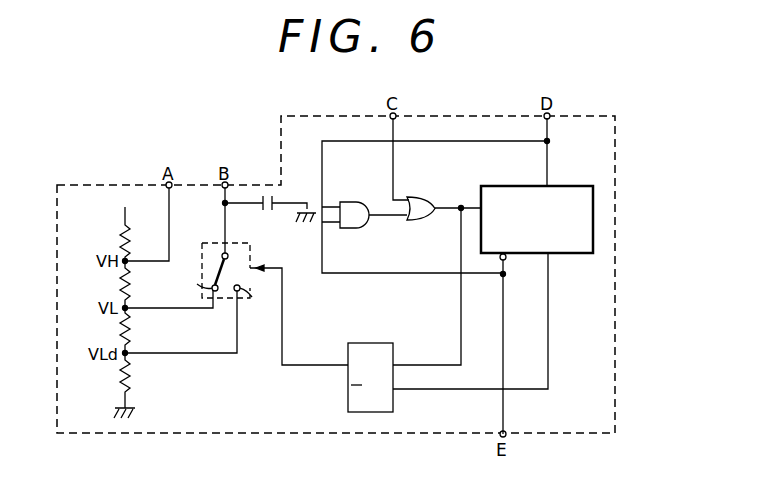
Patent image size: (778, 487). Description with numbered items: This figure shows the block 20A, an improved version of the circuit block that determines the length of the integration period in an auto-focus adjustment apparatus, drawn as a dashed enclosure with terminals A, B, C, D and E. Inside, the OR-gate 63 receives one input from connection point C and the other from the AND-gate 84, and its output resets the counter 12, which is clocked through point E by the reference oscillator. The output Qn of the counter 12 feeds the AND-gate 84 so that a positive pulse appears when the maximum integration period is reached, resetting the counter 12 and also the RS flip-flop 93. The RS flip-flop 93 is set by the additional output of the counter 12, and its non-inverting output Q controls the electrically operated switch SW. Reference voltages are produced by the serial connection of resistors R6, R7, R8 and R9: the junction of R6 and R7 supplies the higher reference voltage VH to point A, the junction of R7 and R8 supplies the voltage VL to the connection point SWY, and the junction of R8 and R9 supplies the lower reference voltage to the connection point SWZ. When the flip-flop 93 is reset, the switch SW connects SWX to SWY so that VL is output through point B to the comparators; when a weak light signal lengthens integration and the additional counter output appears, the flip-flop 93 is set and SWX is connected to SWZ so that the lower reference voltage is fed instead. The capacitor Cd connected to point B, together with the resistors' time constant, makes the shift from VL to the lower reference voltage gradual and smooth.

The block 20A is at (615, 160).
The AND-gate 84 is at (353, 201).
The OR-gate 63 is at (420, 196).
The counter 12 is at (561, 184).
The RS flip-flop 93 is at (372, 343).
The resistor R6 is at (136, 234).
The resistor R7 is at (136, 284).
The resistor R8 is at (136, 330).
The resistor R9 is at (136, 380).
The capacitor Cd is at (270, 210).
The electrically operated switch SW is at (252, 249).
The connection point of switch SWX is at (224, 242).
The connection point of switch SWY is at (186, 294).
The connection point of switch SWZ is at (256, 303).